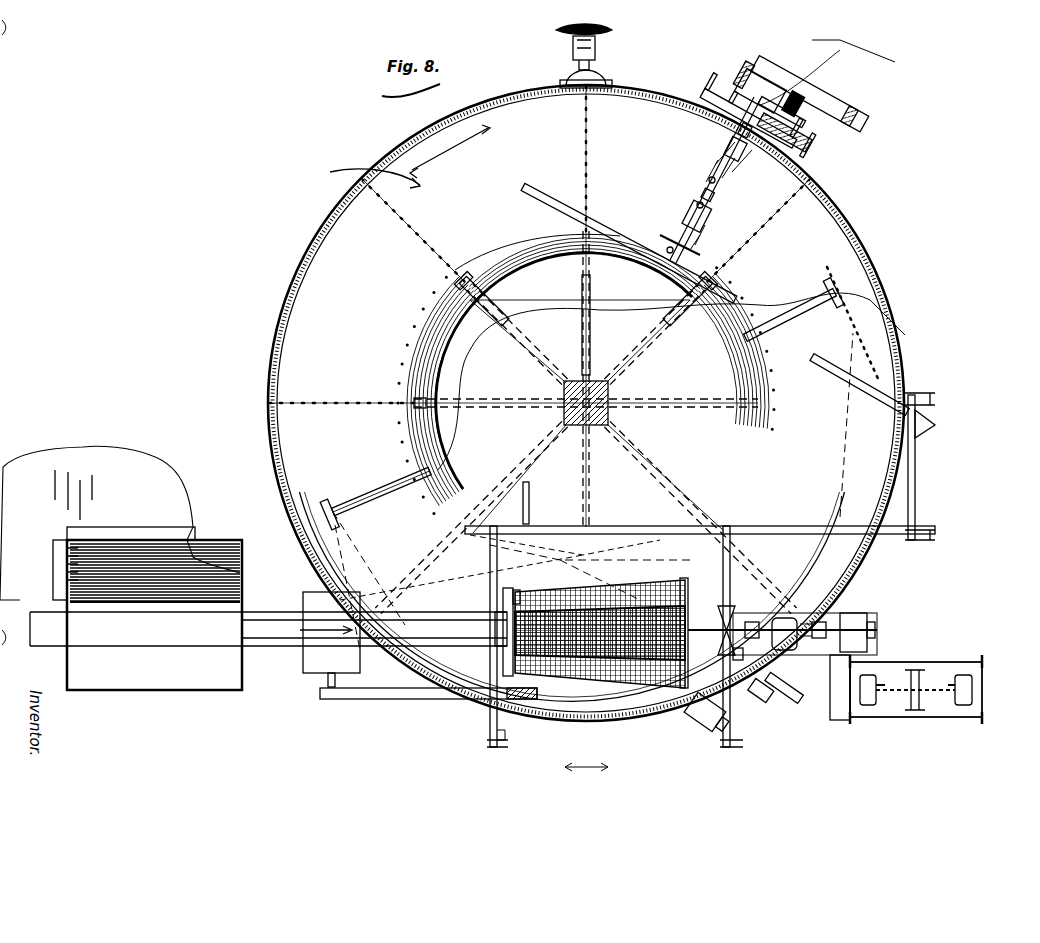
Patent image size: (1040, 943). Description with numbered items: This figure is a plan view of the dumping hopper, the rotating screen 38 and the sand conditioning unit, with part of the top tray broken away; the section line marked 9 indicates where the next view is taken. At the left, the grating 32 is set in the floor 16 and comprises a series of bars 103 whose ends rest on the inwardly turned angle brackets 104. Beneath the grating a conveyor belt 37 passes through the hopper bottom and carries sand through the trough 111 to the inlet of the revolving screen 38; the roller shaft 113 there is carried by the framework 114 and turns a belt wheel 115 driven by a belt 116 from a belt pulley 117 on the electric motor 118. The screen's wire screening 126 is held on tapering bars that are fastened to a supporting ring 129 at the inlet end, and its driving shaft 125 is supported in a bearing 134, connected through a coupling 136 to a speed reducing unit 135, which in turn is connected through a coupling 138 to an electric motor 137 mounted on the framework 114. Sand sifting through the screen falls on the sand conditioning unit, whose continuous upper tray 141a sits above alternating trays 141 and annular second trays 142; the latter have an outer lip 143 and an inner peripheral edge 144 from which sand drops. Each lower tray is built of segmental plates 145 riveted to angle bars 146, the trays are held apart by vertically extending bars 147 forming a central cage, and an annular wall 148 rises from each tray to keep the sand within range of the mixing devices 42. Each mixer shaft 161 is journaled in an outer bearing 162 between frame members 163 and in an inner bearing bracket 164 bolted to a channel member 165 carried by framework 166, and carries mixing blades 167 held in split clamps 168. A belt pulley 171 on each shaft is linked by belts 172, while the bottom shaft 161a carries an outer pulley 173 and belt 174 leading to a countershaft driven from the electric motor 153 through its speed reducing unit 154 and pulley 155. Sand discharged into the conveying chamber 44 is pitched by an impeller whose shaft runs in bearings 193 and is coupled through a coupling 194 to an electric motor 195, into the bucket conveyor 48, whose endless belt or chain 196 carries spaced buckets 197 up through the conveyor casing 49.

The section line 9 is at (730, 412).
The floor 16 is at (165, 475).
The grating 32 is at (135, 548).
The conveyor belt 37 is at (245, 625).
The rotating screen 38 is at (655, 686).
The mixing devices 42 is at (705, 174).
The conveying chamber 44 is at (838, 700).
The bucket conveyor 48 is at (950, 675).
The conveyor casing 49 is at (945, 718).
The bars 103 is at (70, 575).
The angle brackets 104 is at (85, 528).
The trough 111 is at (470, 618).
The shaft 113 is at (500, 700).
The framework 114 is at (555, 528).
The belt wheel 115 is at (503, 735).
The belt 116 is at (400, 700).
The belt pulley 117 is at (332, 700).
The electric motor 118 is at (305, 662).
The driving shaft 125 is at (735, 655).
The wire screening 126 is at (520, 604).
The supporting ring 129 is at (503, 592).
The bearing 134 is at (722, 608).
The speed reducing unit 135 is at (785, 618).
The coupling 136 is at (760, 606).
The electric motor 137 is at (860, 630).
The coupling 138 is at (806, 622).
The trays 141 is at (500, 567).
The upper tray 141a is at (322, 533).
The second tray 142 is at (407, 156).
The lip 143 is at (380, 138).
The inner peripheral edge 144 is at (440, 322).
The segmental plates 145 is at (585, 118).
The angle bars 146 is at (342, 495).
The vertically extending bars 147 is at (574, 270).
The annular wall 148 is at (500, 270).
The electric motor 153 is at (612, 30).
The speed reducing unit 154 is at (612, 78).
The pulley 155 is at (596, 50).
The mixer shaft 161 is at (700, 222).
The bottom shaft 161a is at (821, 67).
The bearing 162 is at (728, 128).
The frame members 163 is at (712, 90).
The bearing bracket 164 is at (668, 248).
The channel member 165 is at (722, 288).
The framework 166 is at (916, 458).
The mixing blades 167 is at (728, 170).
The split clamp 168 is at (720, 190).
The belt pulley 171 is at (778, 108).
The belts 172 is at (750, 70).
The outer pulley 173 is at (765, 70).
The belt 174 is at (866, 118).
The bearings 193 is at (778, 705).
The coupling 194 is at (752, 698).
The electric motor 195 is at (690, 725).
The endless belt or chain 196 is at (915, 672).
The buckets 197 is at (878, 690).